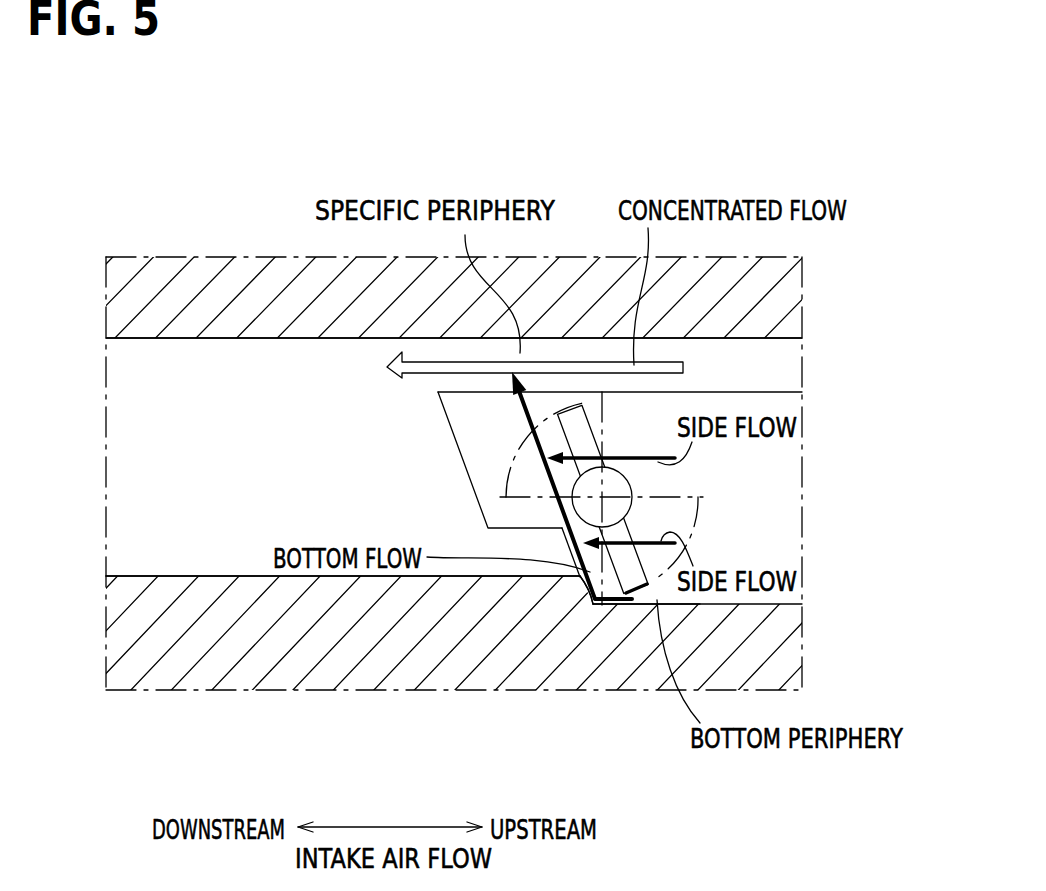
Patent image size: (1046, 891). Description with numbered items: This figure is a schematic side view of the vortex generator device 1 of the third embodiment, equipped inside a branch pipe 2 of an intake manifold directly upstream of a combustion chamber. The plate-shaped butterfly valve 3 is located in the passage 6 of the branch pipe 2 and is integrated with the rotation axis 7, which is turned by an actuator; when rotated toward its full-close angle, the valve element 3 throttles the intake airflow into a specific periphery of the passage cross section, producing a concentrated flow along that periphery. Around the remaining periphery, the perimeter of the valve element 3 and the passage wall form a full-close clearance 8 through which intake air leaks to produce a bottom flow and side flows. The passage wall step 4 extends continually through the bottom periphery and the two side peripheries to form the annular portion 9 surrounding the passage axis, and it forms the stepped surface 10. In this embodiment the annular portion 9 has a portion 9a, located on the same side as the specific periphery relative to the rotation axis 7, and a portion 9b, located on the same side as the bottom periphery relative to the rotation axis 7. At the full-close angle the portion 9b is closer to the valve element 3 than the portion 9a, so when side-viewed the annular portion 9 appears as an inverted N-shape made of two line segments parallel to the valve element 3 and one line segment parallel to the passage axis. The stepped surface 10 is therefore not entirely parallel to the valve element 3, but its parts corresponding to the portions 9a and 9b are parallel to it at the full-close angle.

The vortex generator device 1 is at (114, 219).
The branch pipe 2 is at (165, 670).
The butterfly valve 3 is at (649, 584).
The passage wall step 4 is at (586, 590).
The passage 6 is at (127, 458).
The rotation axis 7 is at (617, 488).
The full-close clearance 8 is at (648, 600).
The annular portion 9 is at (375, 437).
The portion of annular portion 9a is at (452, 430).
The portion of annular portion 9b is at (568, 546).
The stepped surface 10 is at (592, 603).